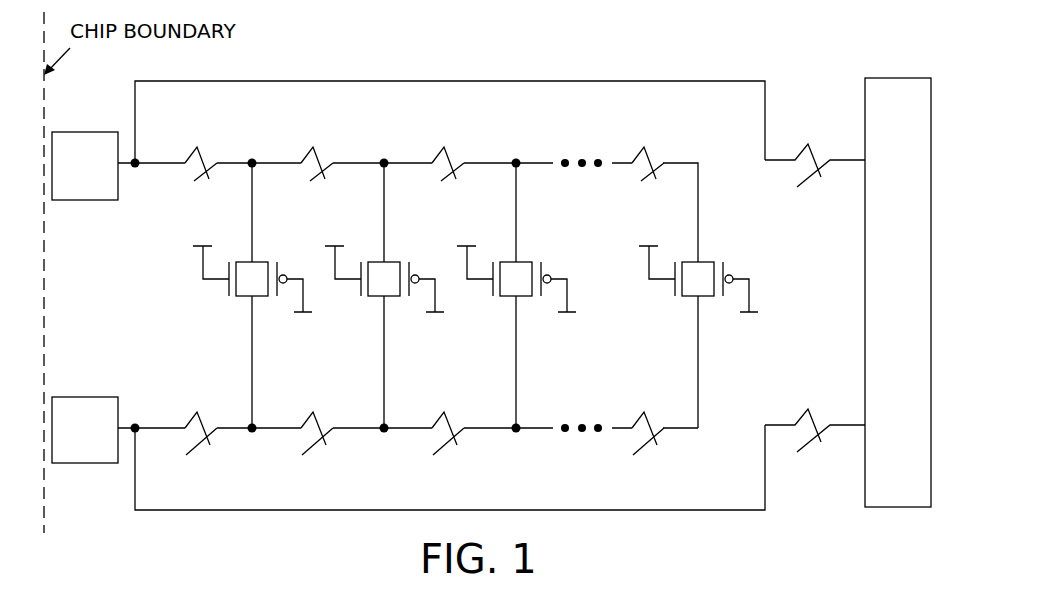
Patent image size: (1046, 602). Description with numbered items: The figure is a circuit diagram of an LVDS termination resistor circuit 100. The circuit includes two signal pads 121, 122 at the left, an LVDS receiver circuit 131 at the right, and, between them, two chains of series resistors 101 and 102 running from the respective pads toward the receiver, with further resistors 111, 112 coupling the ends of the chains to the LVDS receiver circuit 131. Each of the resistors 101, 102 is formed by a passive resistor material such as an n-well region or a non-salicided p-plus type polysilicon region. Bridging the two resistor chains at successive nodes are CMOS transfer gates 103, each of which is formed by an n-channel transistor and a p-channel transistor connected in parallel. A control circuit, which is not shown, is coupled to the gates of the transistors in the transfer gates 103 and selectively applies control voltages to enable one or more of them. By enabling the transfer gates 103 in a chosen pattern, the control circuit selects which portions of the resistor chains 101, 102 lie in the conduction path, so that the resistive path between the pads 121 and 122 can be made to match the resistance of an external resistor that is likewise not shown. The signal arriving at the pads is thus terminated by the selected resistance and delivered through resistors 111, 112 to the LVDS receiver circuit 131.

The LVDS termination resistor circuit 100 is at (496, 59).
The resistors 101 is at (415, 171).
The resistors 102 is at (407, 436).
The CMOS transfer gates 103 is at (689, 296).
The resistor 111 is at (815, 161).
The resistor 112 is at (815, 427).
The signal pad 121 is at (85, 166).
The signal pad 122 is at (85, 430).
The LVDS receiver circuit 131 is at (898, 292).